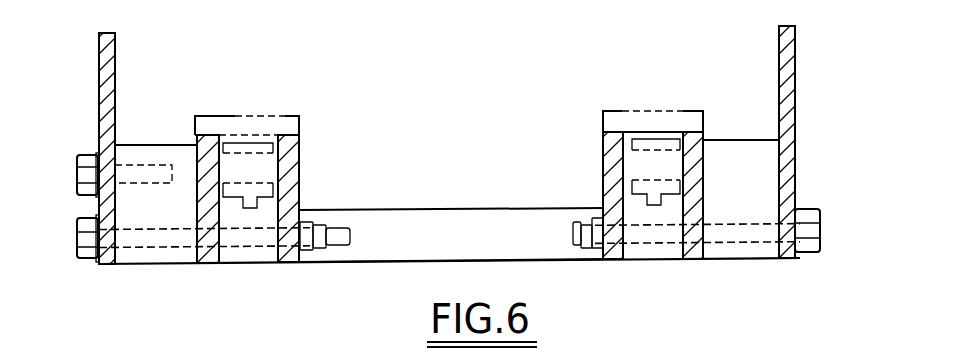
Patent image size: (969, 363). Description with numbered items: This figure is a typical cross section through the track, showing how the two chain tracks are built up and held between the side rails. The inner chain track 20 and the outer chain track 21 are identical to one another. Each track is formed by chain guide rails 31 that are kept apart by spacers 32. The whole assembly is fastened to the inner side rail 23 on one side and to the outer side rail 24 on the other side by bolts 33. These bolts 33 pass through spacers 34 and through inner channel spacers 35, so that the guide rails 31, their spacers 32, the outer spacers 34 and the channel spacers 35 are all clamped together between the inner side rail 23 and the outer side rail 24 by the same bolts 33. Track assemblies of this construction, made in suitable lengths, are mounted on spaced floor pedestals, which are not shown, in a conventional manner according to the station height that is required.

The inner chain track 20 is at (449, 189).
The outer chain track 21 is at (677, 88).
The inner side rail 23 is at (99, 58).
The outer side rail 24 is at (795, 88).
The chain guide rails 31 is at (283, 134).
The spacers 32 is at (253, 255).
The bolts 33 is at (77, 225).
The spacers 34 is at (163, 260).
The inner channel spacers 35 is at (440, 209).